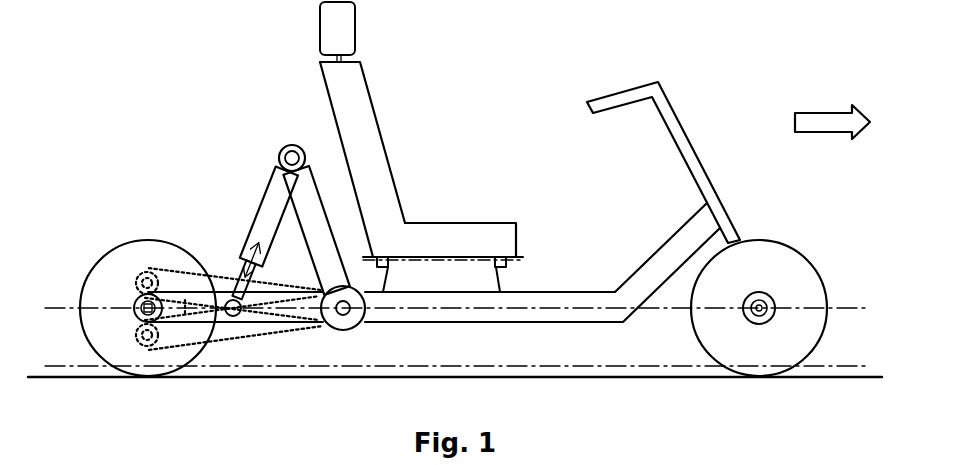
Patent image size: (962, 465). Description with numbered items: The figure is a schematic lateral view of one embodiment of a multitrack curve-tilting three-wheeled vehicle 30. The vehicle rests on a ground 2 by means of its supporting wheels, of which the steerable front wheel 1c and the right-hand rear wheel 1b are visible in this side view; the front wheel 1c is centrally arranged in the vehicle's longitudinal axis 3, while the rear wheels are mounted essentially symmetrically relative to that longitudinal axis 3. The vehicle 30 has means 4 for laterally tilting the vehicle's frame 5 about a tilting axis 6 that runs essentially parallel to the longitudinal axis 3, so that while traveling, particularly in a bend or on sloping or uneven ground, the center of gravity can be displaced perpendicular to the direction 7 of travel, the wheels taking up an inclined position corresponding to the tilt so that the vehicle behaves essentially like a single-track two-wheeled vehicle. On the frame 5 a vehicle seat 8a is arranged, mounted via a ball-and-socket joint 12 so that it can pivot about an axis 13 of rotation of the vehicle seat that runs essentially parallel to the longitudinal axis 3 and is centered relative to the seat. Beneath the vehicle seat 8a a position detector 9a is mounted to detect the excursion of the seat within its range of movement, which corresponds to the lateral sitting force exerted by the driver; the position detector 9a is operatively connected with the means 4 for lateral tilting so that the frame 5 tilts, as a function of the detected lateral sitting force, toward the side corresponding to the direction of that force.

The three-wheeled vehicle 30 is at (142, 50).
The right-hand rear wheel 1b is at (123, 265).
The front wheel 1c is at (787, 262).
The ground 2 is at (93, 380).
The vehicle's longitudinal axis 3 is at (843, 300).
The means for laterally tilting 4 is at (275, 198).
The vehicle's frame 5 is at (553, 307).
The tilting axis 6 is at (832, 363).
The direction of travel 7 is at (830, 120).
The vehicle seat 8a is at (388, 110).
The position detector 9a is at (432, 275).
The ball-and-socket joint 12 is at (380, 255).
The axis of rotation of the vehicle seat 13 is at (518, 258).